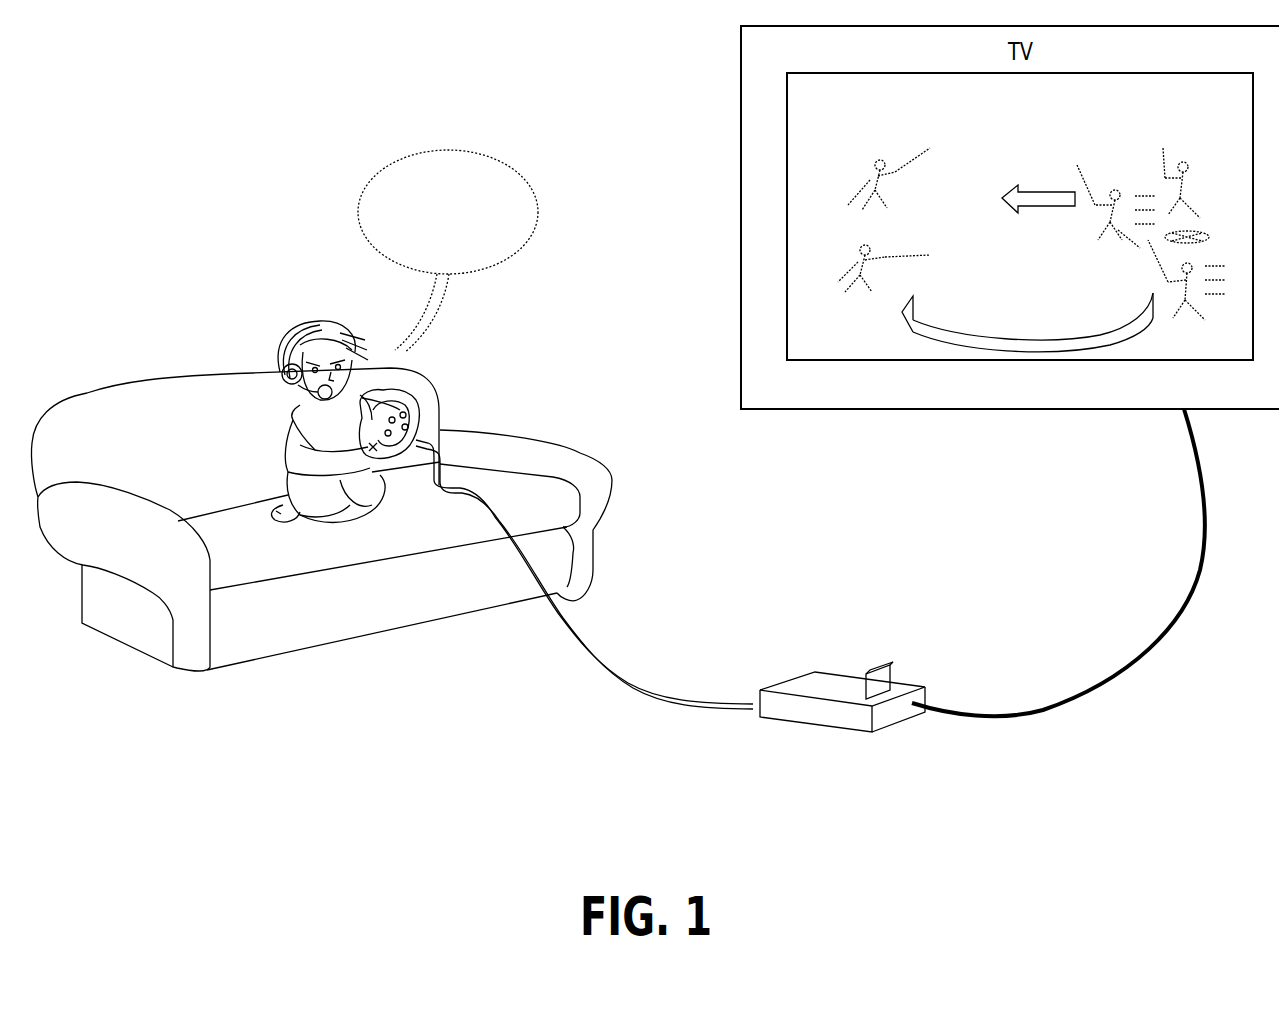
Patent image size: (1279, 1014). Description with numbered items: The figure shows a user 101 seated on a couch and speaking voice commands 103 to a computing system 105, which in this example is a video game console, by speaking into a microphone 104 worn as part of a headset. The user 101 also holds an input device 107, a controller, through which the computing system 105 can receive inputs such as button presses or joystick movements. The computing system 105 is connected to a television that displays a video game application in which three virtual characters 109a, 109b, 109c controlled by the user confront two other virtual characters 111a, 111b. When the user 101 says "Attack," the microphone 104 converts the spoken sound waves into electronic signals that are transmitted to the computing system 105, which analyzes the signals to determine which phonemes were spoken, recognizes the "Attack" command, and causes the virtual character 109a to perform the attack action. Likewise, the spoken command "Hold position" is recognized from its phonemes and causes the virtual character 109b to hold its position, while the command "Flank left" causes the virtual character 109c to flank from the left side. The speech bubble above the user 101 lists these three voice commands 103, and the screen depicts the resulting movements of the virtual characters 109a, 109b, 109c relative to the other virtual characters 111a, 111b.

The user 101 is at (307, 321).
The voice commands 103 is at (394, 157).
The microphone 104 is at (314, 404).
The computing system 105 is at (811, 670).
The input device 107 is at (417, 405).
The virtual character 109a is at (1108, 172).
The virtual character 109b is at (1176, 140).
The virtual character 109c is at (1187, 348).
The other virtual character 111a is at (886, 145).
The other virtual character 111b is at (884, 303).